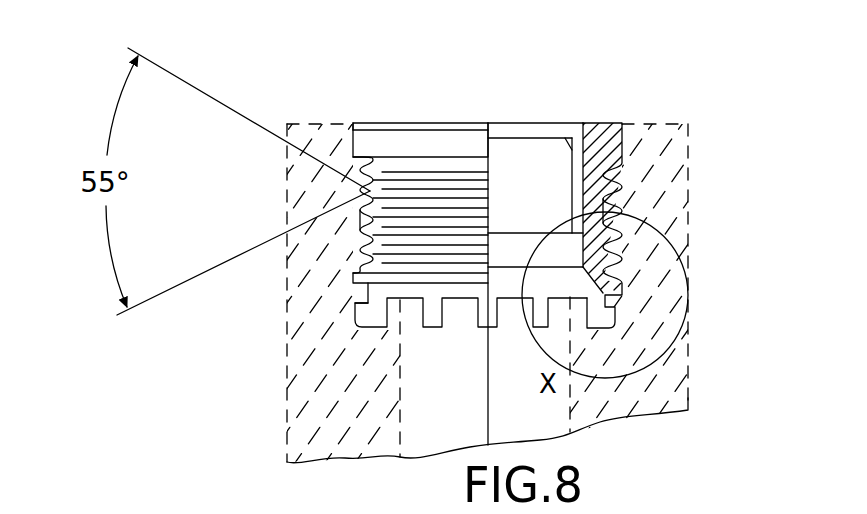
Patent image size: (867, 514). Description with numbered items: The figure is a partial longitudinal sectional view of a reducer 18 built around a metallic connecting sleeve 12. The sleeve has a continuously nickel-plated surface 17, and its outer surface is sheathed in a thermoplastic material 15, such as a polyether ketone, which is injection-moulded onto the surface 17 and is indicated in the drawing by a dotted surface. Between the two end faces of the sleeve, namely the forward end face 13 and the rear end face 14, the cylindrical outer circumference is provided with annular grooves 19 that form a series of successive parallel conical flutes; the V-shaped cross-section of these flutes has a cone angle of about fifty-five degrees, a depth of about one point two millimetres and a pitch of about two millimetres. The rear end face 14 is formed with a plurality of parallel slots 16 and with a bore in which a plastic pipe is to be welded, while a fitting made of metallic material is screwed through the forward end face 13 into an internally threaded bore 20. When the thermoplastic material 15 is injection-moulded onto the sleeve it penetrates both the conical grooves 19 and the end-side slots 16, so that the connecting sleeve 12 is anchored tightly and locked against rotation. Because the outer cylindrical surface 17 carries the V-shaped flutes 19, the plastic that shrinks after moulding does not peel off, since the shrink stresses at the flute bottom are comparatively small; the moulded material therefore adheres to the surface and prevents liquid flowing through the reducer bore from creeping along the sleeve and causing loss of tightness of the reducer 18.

The metallic connecting sleeve 12 is at (403, 112).
The forward end face 13 is at (500, 123).
The rear end face 14 is at (363, 330).
The thermoplastic material 15 is at (313, 260).
The parallel slots 16 is at (493, 330).
The nickel-plated surface 17 is at (353, 124).
The reducer 18 is at (702, 220).
The annular grooves 19 is at (358, 262).
The internally threaded bore 20 is at (572, 197).